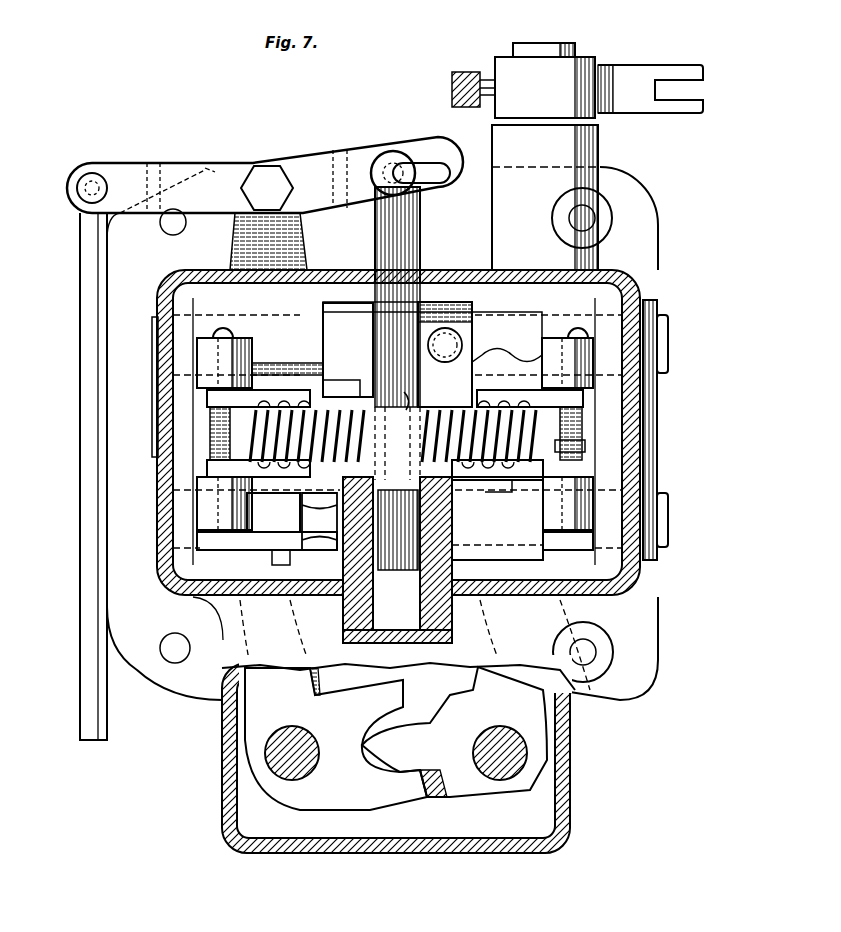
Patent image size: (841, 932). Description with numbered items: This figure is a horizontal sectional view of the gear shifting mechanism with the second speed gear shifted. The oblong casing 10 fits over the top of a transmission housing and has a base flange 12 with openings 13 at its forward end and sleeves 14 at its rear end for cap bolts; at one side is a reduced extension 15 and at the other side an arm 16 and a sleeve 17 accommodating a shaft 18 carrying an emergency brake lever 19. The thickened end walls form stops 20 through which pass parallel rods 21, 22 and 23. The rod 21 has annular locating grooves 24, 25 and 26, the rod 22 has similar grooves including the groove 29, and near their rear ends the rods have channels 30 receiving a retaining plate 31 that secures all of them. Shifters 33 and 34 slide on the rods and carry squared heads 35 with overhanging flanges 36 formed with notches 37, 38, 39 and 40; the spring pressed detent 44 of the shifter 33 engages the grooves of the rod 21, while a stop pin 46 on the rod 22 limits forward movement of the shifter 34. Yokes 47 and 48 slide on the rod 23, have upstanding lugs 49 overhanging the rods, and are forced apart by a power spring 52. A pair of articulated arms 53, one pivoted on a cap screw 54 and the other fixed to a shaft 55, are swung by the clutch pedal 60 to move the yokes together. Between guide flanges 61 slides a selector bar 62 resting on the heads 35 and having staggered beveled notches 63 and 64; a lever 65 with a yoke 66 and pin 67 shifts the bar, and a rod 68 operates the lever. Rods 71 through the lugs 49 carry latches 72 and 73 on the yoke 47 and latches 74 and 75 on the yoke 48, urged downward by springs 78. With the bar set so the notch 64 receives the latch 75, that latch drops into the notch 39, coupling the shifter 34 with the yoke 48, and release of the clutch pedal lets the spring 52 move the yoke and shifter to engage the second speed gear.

The casing 10 is at (185, 595).
The base flange 12 is at (645, 262).
The openings 13 is at (168, 232).
The sleeves 14 is at (600, 232).
The reduced extension 15 is at (425, 853).
The arm 16 is at (268, 241).
The sleeve 17 is at (598, 158).
The shaft 18 is at (555, 48).
The emergency brake lever 19 is at (618, 82).
The stops 20 is at (175, 388).
The rod 21 is at (287, 356).
The rod 22 is at (285, 540).
The rod 23 is at (155, 445).
The locating groove 24 is at (472, 315).
The locating groove 25 is at (325, 302).
The locating groove 26 is at (515, 322).
The locating groove 29 is at (319, 521).
The annular channels 30 is at (668, 332).
The retaining plate 31 is at (658, 478).
The shifter 33 is at (443, 300).
The shifter 34 is at (470, 600).
The heads 35 is at (348, 350).
The overhanging flanges 36 is at (497, 520).
The notch 37 is at (341, 385).
The notch 38 is at (456, 383).
The notch 39 is at (500, 494).
The notch 40 is at (470, 478).
The ball detent 44 is at (462, 340).
The stop pin 46 is at (290, 560).
The yoke 47 is at (210, 468).
The yoke 48 is at (585, 446).
The lugs 49 is at (252, 350).
The power spring 52 is at (326, 466).
The arms 53 is at (396, 738).
The cap screw 54 is at (512, 758).
The shaft 55 is at (305, 760).
The clutch pedal 60 is at (420, 520).
The guide flanges 61 is at (412, 580).
The selector bar 62 is at (422, 250).
The notch 63 is at (403, 392).
The notch 64 is at (400, 480).
The lever 65 is at (318, 165).
The yoke 66 is at (455, 165).
The pin 67 is at (393, 150).
The rod 68 is at (80, 645).
The rods 71 is at (223, 328).
The latch 72 is at (290, 392).
The latch 73 is at (273, 512).
The latch 74 is at (535, 392).
The latch 75 is at (572, 500).
The springs 78 is at (208, 420).